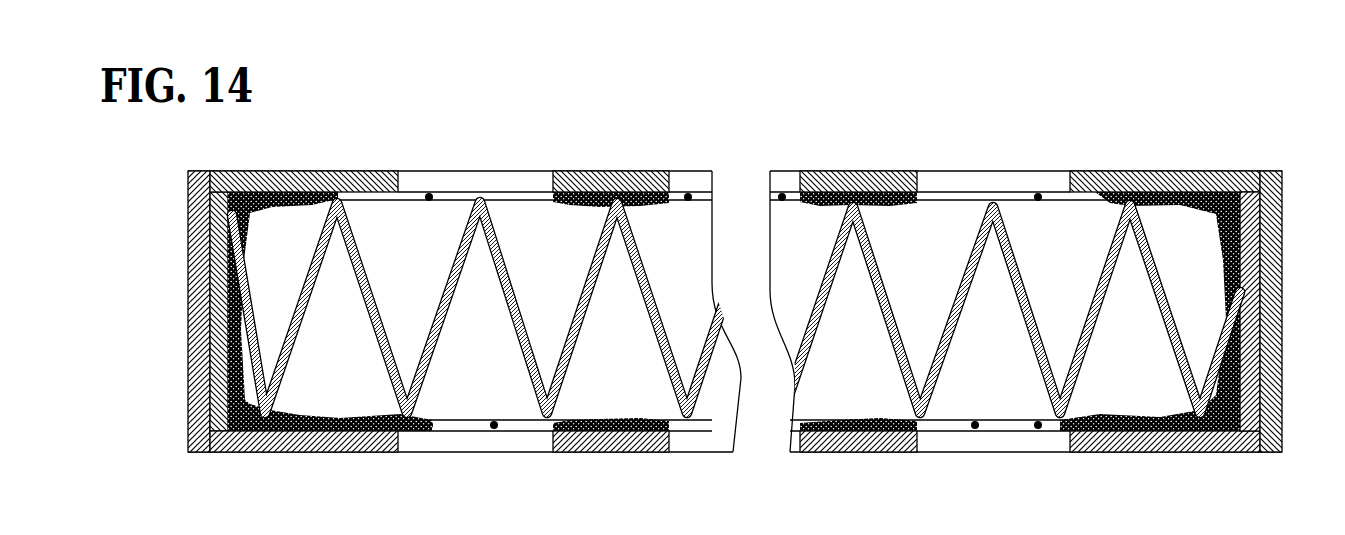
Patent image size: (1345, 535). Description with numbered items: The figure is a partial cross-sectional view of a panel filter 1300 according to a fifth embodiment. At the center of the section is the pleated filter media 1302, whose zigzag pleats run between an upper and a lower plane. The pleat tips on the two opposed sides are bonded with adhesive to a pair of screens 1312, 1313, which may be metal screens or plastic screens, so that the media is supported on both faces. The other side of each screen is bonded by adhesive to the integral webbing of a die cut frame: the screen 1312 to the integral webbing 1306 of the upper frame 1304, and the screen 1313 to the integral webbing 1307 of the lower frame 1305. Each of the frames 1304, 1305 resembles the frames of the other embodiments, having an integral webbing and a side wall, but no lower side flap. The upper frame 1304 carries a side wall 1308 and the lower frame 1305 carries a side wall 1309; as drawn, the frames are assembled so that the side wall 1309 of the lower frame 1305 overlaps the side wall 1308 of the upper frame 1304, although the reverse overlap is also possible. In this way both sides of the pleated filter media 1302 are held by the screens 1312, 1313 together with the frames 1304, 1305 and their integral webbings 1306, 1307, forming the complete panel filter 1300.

The panel filter 1300 is at (1196, 46).
The pleated filter media 1302 is at (1022, 210).
The upper frame 1304 is at (302, 171).
The lower frame 1305 is at (262, 452).
The integral webbing 1306 is at (615, 171).
The integral webbing 1307 is at (622, 452).
The side wall 1308 is at (190, 210).
The side wall 1309 is at (196, 403).
The screen 1312 is at (788, 190).
The screen 1313 is at (985, 452).